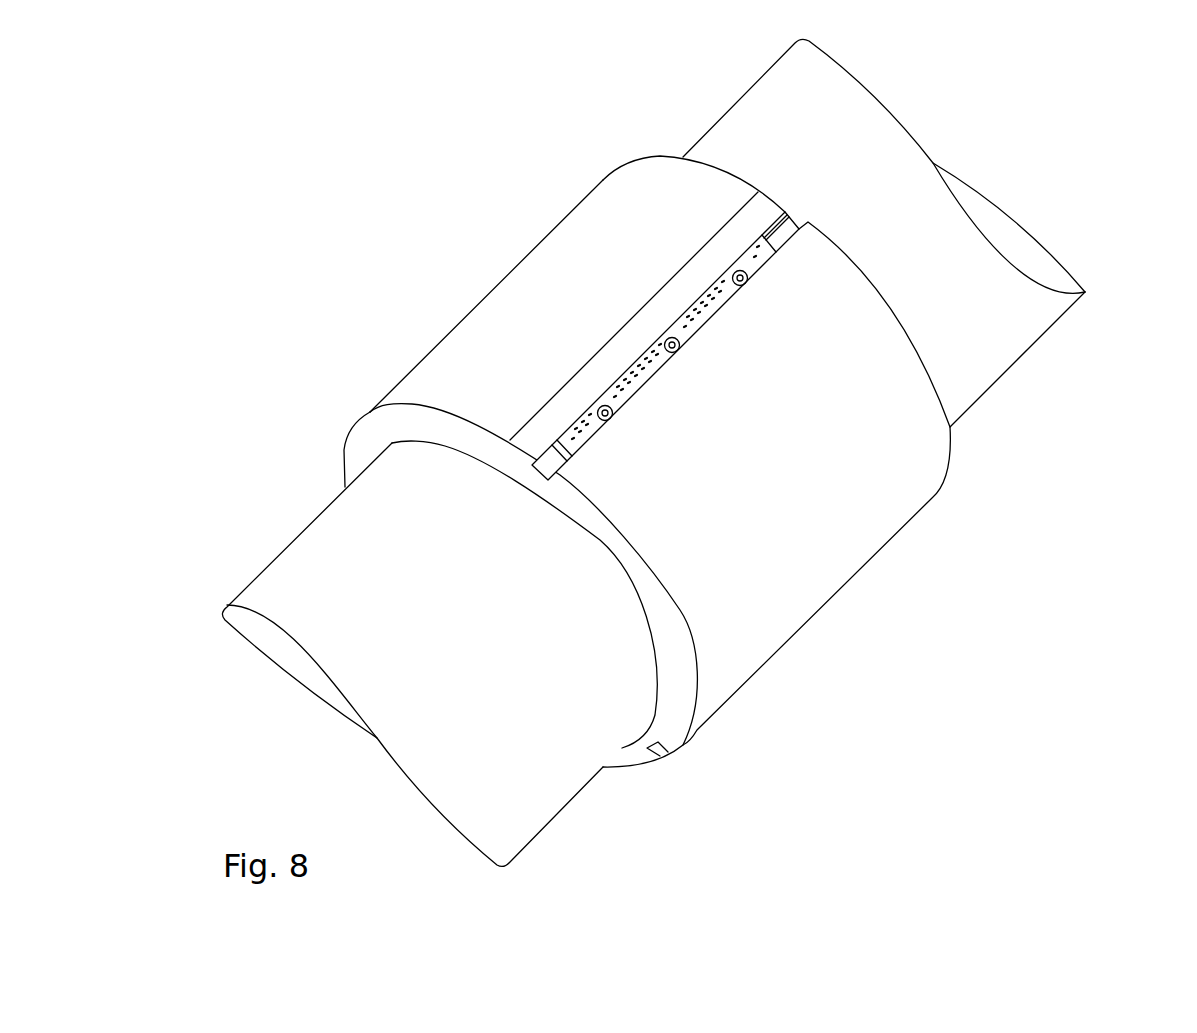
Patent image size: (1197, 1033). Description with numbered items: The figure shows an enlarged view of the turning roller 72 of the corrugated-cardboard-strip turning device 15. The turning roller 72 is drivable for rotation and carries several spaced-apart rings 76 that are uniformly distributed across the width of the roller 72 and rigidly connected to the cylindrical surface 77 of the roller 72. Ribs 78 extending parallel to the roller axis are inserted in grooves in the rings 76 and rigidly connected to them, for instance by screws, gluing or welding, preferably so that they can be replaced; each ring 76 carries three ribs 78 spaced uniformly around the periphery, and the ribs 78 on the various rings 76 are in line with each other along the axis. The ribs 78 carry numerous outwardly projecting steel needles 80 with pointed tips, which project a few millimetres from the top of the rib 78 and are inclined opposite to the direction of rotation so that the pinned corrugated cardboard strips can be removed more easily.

The corrugated-cardboard-strip turning device 15 is at (372, 268).
The turning roller 72 is at (982, 317).
The rings 76 is at (458, 378).
The cylindrical surface 77 is at (1000, 378).
The ribs 78 is at (740, 253).
The needles 80 is at (672, 322).